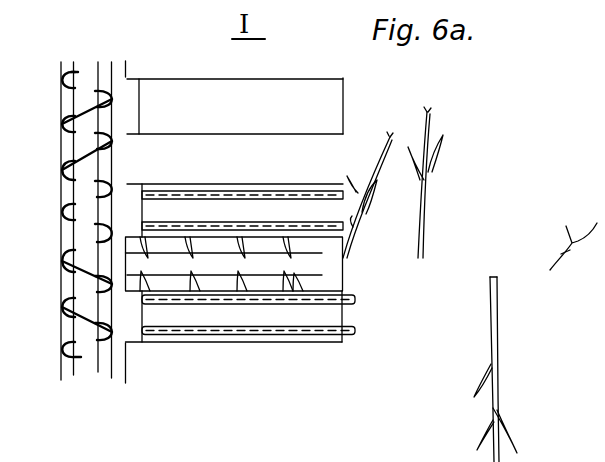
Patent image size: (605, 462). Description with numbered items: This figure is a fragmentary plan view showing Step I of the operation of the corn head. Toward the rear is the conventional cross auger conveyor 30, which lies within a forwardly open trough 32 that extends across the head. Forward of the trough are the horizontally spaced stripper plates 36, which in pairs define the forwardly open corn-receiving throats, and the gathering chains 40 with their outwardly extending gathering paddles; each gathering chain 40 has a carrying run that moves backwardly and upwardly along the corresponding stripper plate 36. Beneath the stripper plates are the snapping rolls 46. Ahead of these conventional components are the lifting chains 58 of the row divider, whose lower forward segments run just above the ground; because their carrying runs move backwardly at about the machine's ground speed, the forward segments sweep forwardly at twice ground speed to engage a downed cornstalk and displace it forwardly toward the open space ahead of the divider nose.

The cross auger conveyor 30 is at (78, 186).
The forwardly open trough 32 is at (67, 240).
The stripper plate 36 is at (283, 281).
The gathering chain 40 is at (262, 310).
The snapping roll 46 is at (292, 241).
The lifting chain 58 is at (354, 335).